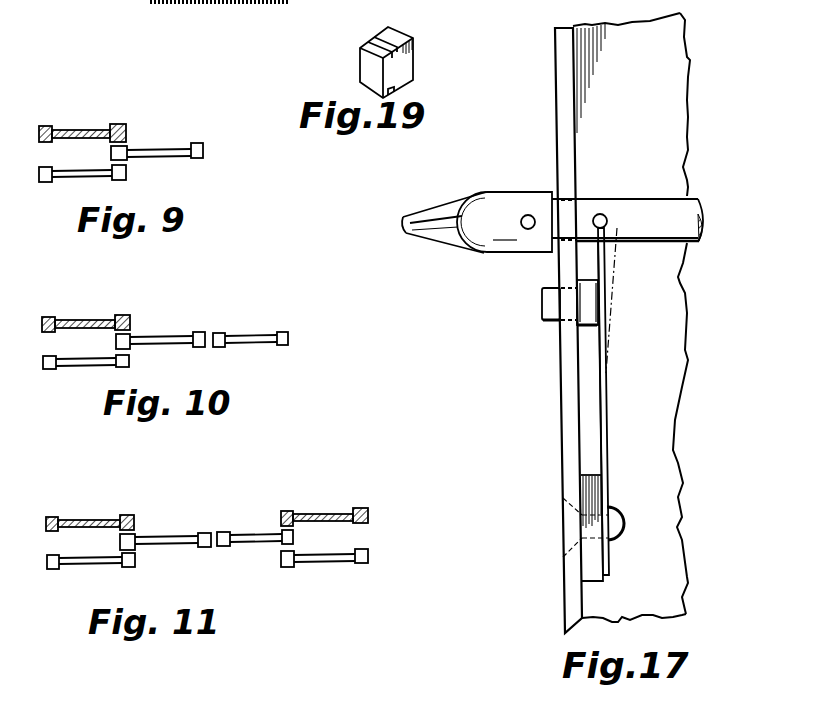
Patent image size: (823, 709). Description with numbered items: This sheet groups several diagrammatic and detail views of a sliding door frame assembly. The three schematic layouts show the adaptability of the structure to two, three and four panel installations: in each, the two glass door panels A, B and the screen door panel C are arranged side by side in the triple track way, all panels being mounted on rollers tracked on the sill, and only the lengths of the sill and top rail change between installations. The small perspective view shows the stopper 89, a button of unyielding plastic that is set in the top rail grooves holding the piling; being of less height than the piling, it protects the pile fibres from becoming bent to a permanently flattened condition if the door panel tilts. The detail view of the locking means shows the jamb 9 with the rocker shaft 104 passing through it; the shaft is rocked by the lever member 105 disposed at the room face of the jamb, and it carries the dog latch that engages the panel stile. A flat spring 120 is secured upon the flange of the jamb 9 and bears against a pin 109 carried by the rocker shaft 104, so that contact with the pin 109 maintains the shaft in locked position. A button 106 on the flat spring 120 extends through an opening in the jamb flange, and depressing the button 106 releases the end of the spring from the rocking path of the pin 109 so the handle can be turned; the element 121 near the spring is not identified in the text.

In FIG. 9, the glass door panel A is at (73, 177).
In FIG. 10, the glass door panel A is at (77, 367).
In FIG. 11, the glass door panel A is at (80, 565).
In FIG. 9, the glass door panel B is at (157, 156).
In FIG. 10, the glass door panel B is at (172, 337).
In FIG. 11, the glass door panel B is at (175, 537).
In FIG. 9, the screen door panel C is at (75, 127).
In FIG. 10, the screen door panel C is at (73, 317).
In FIG. 11, the screen door panel C is at (70, 518).
In FIG. 19, the stopper 89 is at (412, 68).
In FIG. 17, the side jamb 9 is at (565, 407).
In FIG. 17, the rocker shaft 104 is at (683, 181).
In FIG. 17, the lever member 105 is at (453, 198).
In FIG. 17, the button 106 is at (545, 307).
In FIG. 17, the pin 109 is at (603, 214).
In FIG. 17, the flat spring 120 is at (611, 398).
In FIG. 17, the detent bump 121 is at (621, 529).